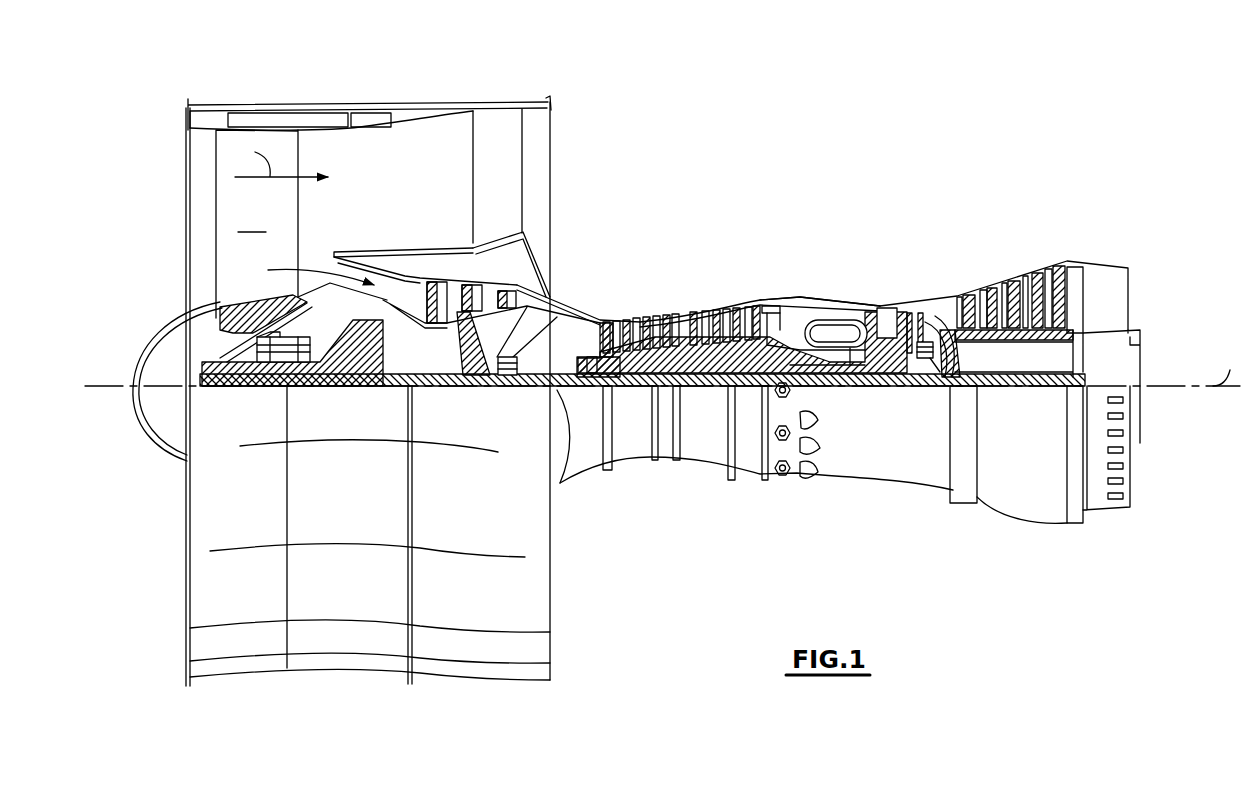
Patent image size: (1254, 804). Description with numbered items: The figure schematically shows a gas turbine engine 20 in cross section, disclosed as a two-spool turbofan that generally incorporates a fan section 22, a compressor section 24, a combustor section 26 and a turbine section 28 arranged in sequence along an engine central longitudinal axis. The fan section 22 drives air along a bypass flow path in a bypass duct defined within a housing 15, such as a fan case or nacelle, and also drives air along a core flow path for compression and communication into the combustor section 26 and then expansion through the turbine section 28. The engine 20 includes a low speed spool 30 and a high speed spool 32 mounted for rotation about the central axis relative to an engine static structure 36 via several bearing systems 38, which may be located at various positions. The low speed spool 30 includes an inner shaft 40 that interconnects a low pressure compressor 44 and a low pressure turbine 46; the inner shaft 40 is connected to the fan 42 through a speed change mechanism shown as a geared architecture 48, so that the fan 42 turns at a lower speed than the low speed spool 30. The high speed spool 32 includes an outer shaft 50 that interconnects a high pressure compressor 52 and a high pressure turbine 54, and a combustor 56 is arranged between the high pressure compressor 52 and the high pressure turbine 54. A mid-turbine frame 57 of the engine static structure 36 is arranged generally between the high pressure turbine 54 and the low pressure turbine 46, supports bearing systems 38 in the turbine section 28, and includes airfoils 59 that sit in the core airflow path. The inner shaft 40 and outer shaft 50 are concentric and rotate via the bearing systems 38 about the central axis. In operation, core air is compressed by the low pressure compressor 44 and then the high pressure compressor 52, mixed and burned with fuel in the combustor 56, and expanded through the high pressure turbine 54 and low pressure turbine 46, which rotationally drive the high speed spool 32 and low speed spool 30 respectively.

The housing 15 is at (369, 106).
The gas turbine engine 20 is at (830, 152).
The fan section 22 is at (298, 93).
The compressor section 24 is at (599, 292).
The combustor section 26 is at (822, 278).
The turbine section 28 is at (974, 243).
The low speed spool 30 is at (707, 396).
The high speed spool 32 is at (756, 318).
The engine static structure 36 is at (749, 478).
The bearing systems 38 is at (505, 376).
The inner shaft 40 is at (573, 392).
The fan 42 is at (370, 407).
The low pressure compressor 44 is at (483, 290).
The low pressure turbine 46 is at (1014, 277).
The geared architecture 48 is at (374, 376).
The outer shaft 50 is at (828, 374).
The high pressure compressor 52 is at (680, 318).
The high pressure turbine 54 is at (886, 308).
The combustor 56 is at (828, 326).
The mid-turbine frame 57 is at (940, 292).
The airfoils 59 is at (930, 320).